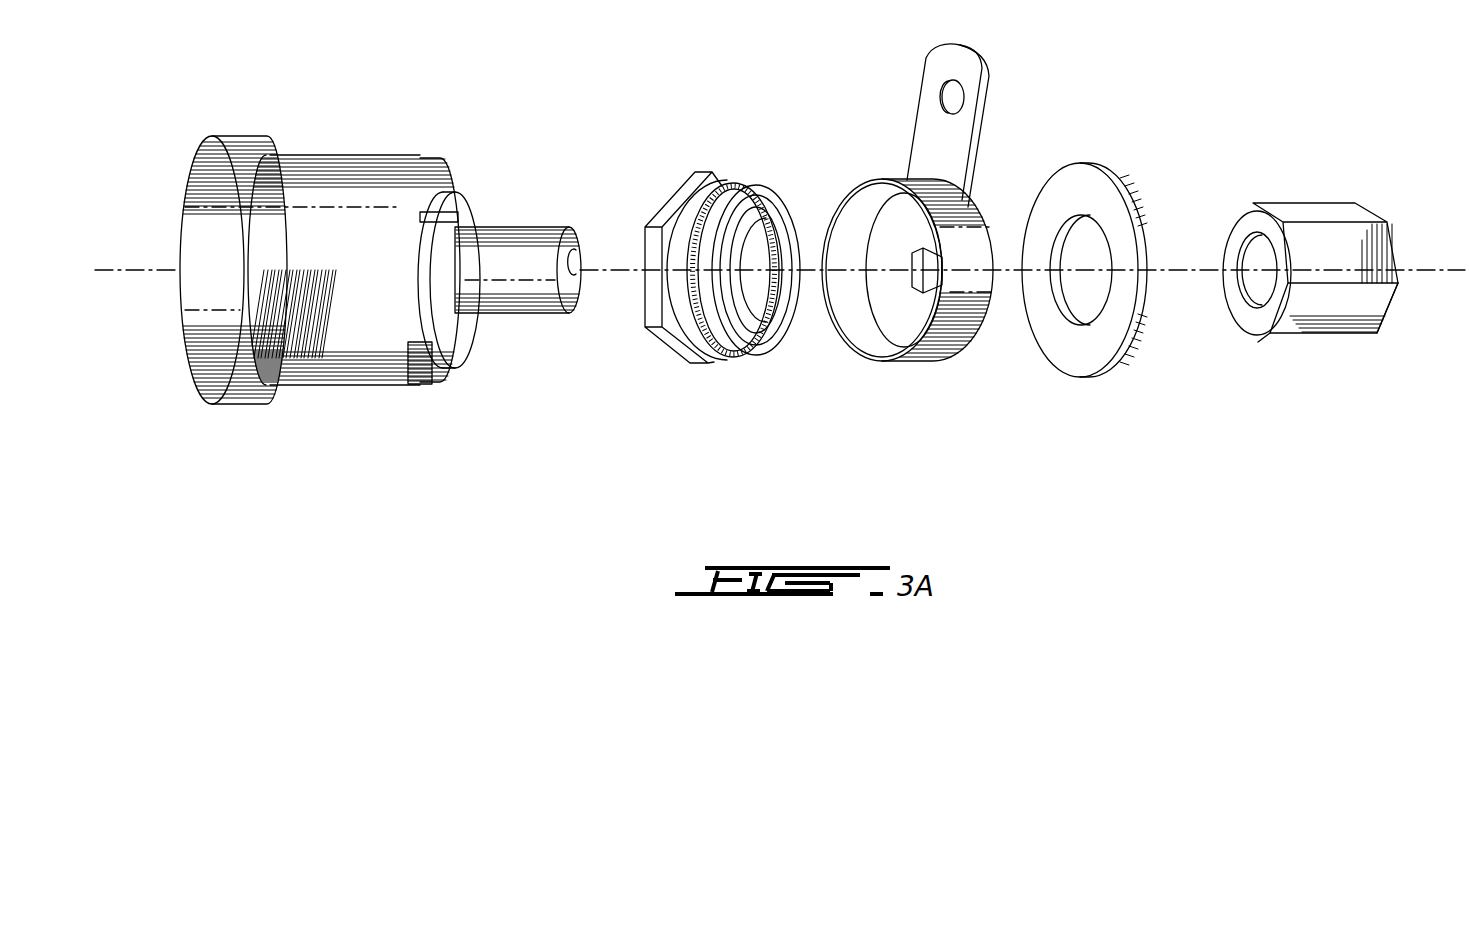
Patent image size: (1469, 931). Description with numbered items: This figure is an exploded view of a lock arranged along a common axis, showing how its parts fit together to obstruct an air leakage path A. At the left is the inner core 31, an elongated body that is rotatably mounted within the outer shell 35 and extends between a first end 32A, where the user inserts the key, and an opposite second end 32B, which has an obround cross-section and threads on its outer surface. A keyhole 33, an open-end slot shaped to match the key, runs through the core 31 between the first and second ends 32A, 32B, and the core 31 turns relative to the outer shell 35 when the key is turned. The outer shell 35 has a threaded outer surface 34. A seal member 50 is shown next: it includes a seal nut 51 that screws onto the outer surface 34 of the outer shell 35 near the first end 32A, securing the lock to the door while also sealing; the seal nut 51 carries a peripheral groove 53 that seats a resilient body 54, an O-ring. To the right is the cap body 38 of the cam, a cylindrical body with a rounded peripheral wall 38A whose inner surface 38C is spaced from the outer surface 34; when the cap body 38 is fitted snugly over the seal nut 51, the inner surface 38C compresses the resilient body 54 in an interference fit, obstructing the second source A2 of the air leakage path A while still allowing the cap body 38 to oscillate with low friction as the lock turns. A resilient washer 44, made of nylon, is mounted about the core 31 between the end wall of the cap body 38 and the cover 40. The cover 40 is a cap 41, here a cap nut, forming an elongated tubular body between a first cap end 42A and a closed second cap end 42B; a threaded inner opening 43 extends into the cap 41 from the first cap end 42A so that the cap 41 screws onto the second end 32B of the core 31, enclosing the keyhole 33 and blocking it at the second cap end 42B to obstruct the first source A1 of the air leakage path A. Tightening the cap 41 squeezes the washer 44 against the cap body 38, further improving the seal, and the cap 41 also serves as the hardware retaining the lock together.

The inner core 31 is at (503, 300).
The first end 32A is at (218, 432).
The second end 32B is at (568, 342).
The keyhole 33 is at (500, 243).
The outer surface 34 is at (358, 258).
The outer shell 35 is at (365, 170).
The air leakage path A is at (178, 264).
The first source A1 is at (548, 245).
The second source A2 is at (441, 366).
The seal member 50 is at (722, 275).
The seal nut 51 is at (705, 366).
The peripheral groove 53 is at (758, 186).
The resilient body 54 is at (725, 186).
The cap body 38 is at (906, 271).
The peripheral wall 38A is at (952, 332).
The inner surface 38C is at (868, 212).
The resilient washer 44 is at (1078, 358).
The cover 40 is at (1327, 253).
The cap 41 is at (1335, 317).
The first cap end 42A is at (1257, 345).
The second cap end 42B is at (1400, 327).
The inner opening 43 is at (1257, 260).